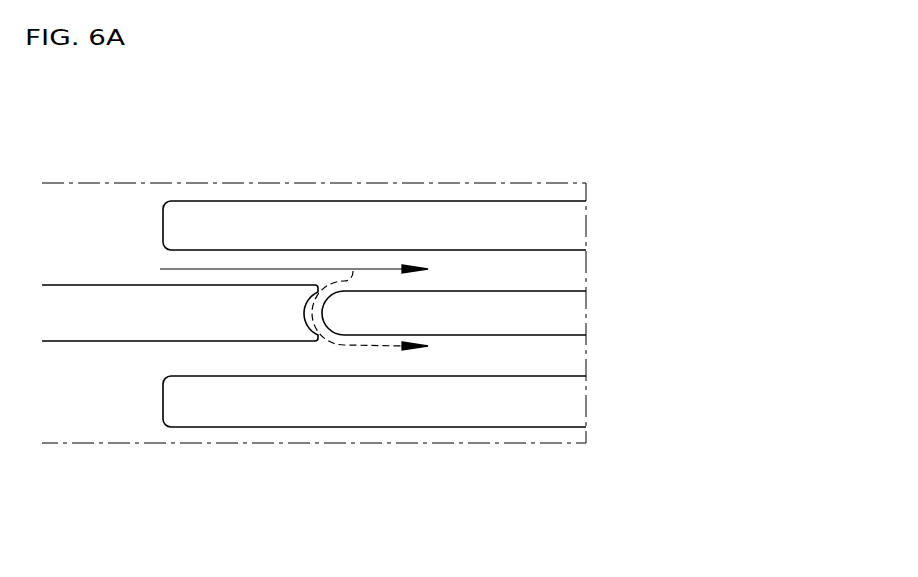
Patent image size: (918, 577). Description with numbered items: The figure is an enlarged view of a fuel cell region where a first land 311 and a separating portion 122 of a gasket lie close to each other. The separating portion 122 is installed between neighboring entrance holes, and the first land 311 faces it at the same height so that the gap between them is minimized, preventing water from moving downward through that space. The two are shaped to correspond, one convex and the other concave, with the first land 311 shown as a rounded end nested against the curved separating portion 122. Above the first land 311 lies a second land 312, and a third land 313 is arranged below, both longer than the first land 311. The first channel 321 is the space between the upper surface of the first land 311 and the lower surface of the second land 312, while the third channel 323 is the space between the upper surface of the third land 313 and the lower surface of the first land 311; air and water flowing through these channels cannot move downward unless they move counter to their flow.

The entrance separating portion 122 is at (101, 300).
The first land 311 is at (542, 300).
The second land 312 is at (288, 224).
The third land 313 is at (288, 403).
The first channel 321 is at (463, 272).
The third channel 323 is at (500, 354).